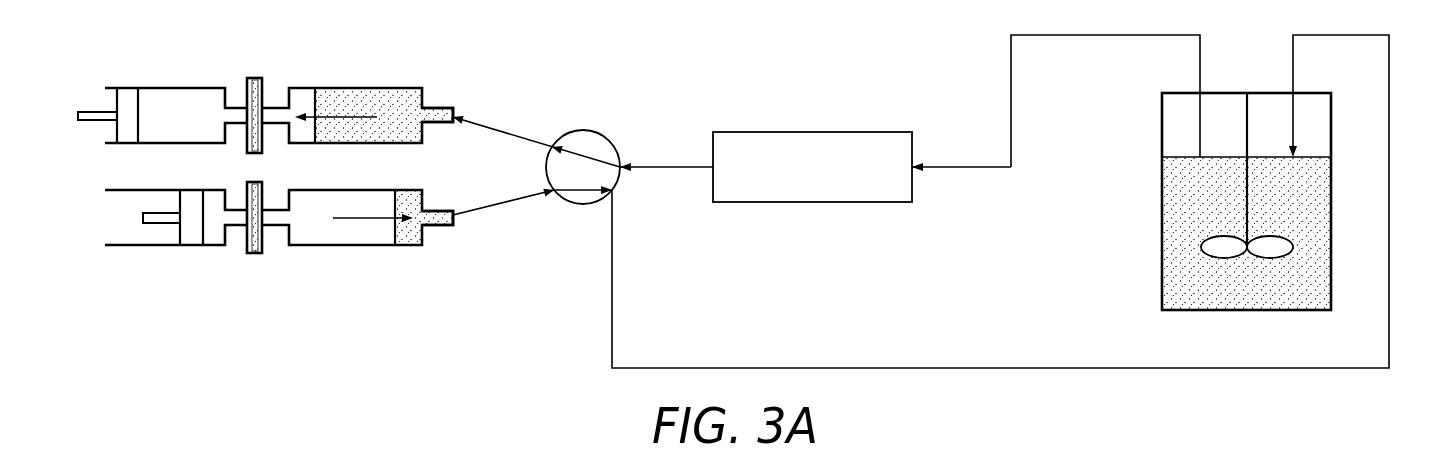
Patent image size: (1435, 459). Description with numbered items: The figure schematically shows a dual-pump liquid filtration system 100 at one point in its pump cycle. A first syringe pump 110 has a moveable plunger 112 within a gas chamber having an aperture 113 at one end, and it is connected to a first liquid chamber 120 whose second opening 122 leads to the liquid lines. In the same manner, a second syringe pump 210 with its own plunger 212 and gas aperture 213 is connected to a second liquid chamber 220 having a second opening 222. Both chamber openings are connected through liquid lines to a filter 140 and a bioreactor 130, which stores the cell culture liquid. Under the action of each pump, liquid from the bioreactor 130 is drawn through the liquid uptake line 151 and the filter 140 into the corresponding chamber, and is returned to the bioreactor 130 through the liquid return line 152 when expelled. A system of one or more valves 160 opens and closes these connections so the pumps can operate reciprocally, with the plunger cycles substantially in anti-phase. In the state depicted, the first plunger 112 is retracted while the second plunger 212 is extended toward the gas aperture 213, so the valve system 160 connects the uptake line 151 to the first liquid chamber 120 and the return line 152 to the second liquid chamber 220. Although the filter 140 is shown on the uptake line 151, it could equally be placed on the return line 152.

The liquid filtration system 100 is at (723, 66).
The syringe pump 110 is at (170, 88).
The plunger 112 is at (127, 97).
The aperture 113 is at (237, 112).
The liquid chamber 120 is at (348, 88).
The second opening 122 is at (426, 108).
The bioreactor 130 is at (1162, 199).
The filter 140 is at (810, 132).
The liquid uptake line 151 is at (672, 170).
The liquid return line 152 is at (1025, 368).
The valve system 160 is at (583, 130).
The second syringe pump 210 is at (128, 248).
The second plunger 212 is at (190, 236).
The gas aperture 213 is at (238, 220).
The second liquid chamber 220 is at (352, 245).
The second opening 222 is at (424, 221).